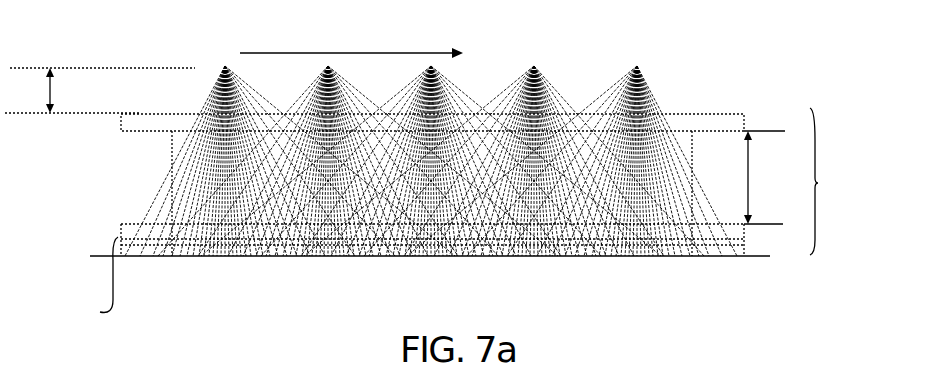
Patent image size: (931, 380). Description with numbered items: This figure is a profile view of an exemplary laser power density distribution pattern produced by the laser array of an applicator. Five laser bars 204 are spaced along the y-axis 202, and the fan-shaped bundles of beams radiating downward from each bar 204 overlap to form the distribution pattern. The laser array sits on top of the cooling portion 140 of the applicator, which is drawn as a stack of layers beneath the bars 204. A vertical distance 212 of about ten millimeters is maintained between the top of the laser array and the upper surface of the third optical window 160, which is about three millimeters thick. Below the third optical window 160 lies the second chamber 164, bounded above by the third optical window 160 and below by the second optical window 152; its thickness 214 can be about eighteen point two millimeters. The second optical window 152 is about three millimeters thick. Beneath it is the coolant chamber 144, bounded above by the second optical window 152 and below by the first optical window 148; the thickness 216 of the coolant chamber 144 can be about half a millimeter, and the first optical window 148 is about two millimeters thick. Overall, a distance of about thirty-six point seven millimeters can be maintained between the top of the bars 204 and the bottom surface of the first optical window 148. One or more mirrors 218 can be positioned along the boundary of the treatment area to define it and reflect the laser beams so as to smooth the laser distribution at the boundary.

The vertical distance 212 is at (100, 90).
The y-axis 202 is at (325, 53).
The laser bar 204 is at (640, 68).
The third optical window 160 is at (115, 125).
The second chamber 164 is at (122, 163).
The mirror 218 is at (170, 183).
The second optical window 152 is at (118, 229).
The first optical window 148 is at (163, 250).
The coolant chamber 144 is at (88, 277).
The thickness 214 is at (768, 177).
The thickness 216 is at (750, 249).
The cooling portion 140 is at (839, 181).